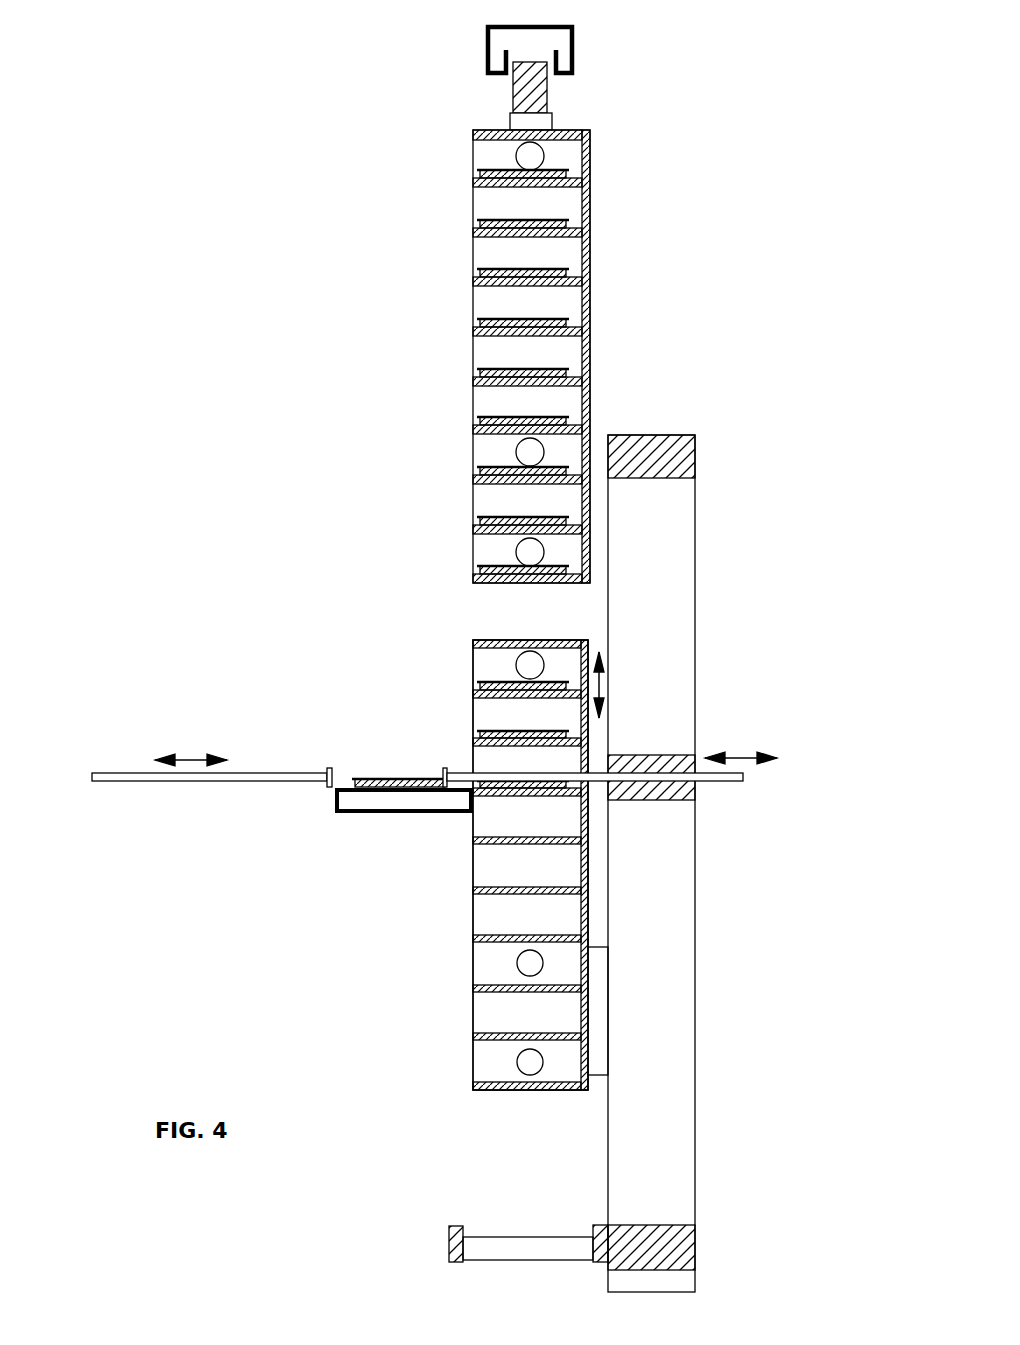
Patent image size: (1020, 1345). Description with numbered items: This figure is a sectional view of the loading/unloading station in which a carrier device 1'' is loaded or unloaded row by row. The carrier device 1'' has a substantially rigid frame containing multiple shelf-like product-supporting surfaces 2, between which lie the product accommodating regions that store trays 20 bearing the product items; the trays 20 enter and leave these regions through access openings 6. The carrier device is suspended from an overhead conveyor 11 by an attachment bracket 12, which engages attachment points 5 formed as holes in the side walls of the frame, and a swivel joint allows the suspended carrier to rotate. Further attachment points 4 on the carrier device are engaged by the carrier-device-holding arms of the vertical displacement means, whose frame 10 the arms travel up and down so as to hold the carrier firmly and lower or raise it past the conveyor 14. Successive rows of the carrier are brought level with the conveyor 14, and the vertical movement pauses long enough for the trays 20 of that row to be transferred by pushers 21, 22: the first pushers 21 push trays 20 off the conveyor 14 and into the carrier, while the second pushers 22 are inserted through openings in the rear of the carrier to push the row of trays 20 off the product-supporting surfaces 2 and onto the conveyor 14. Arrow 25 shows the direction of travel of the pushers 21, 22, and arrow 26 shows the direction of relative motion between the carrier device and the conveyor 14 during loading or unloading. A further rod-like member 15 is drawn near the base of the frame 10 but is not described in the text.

The carrier device 1'' is at (475, 832).
The product-supporting surface 2 is at (483, 431).
The attachment point 4 is at (516, 1061).
The attachment point 5 is at (532, 651).
The access opening 6 is at (456, 350).
The frame 10 is at (680, 452).
The overhead conveyor 11 is at (573, 26).
The attachment bracket 12 is at (540, 97).
The conveyor 14 is at (381, 803).
The guide rod 15 is at (505, 1250).
The tray 20 is at (500, 224).
The pusher 21 is at (142, 782).
The pusher 22 is at (723, 775).
The arrow 25 is at (197, 757).
The arrow 26 is at (602, 672).